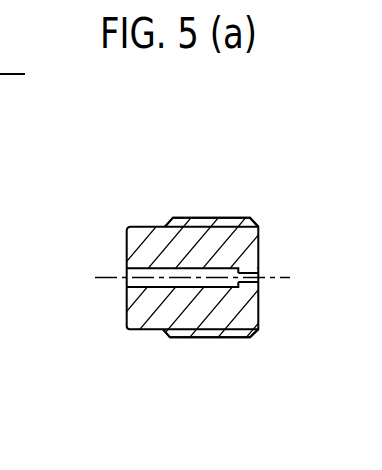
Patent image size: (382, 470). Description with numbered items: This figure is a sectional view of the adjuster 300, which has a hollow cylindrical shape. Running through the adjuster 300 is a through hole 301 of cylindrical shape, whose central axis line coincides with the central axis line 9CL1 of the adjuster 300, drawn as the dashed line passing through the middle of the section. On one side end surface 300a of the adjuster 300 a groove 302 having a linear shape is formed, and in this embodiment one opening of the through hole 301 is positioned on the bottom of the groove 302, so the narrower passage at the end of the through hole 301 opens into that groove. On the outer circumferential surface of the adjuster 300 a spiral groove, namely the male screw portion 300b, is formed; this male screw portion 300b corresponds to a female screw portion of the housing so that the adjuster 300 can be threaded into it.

The adjuster 300 is at (214, 268).
The one side end surface 300a is at (259, 244).
The male screw portion 300b is at (207, 222).
The through hole 301 is at (149, 279).
The groove 302 is at (247, 278).
The central axis line 9CL1 is at (166, 279).